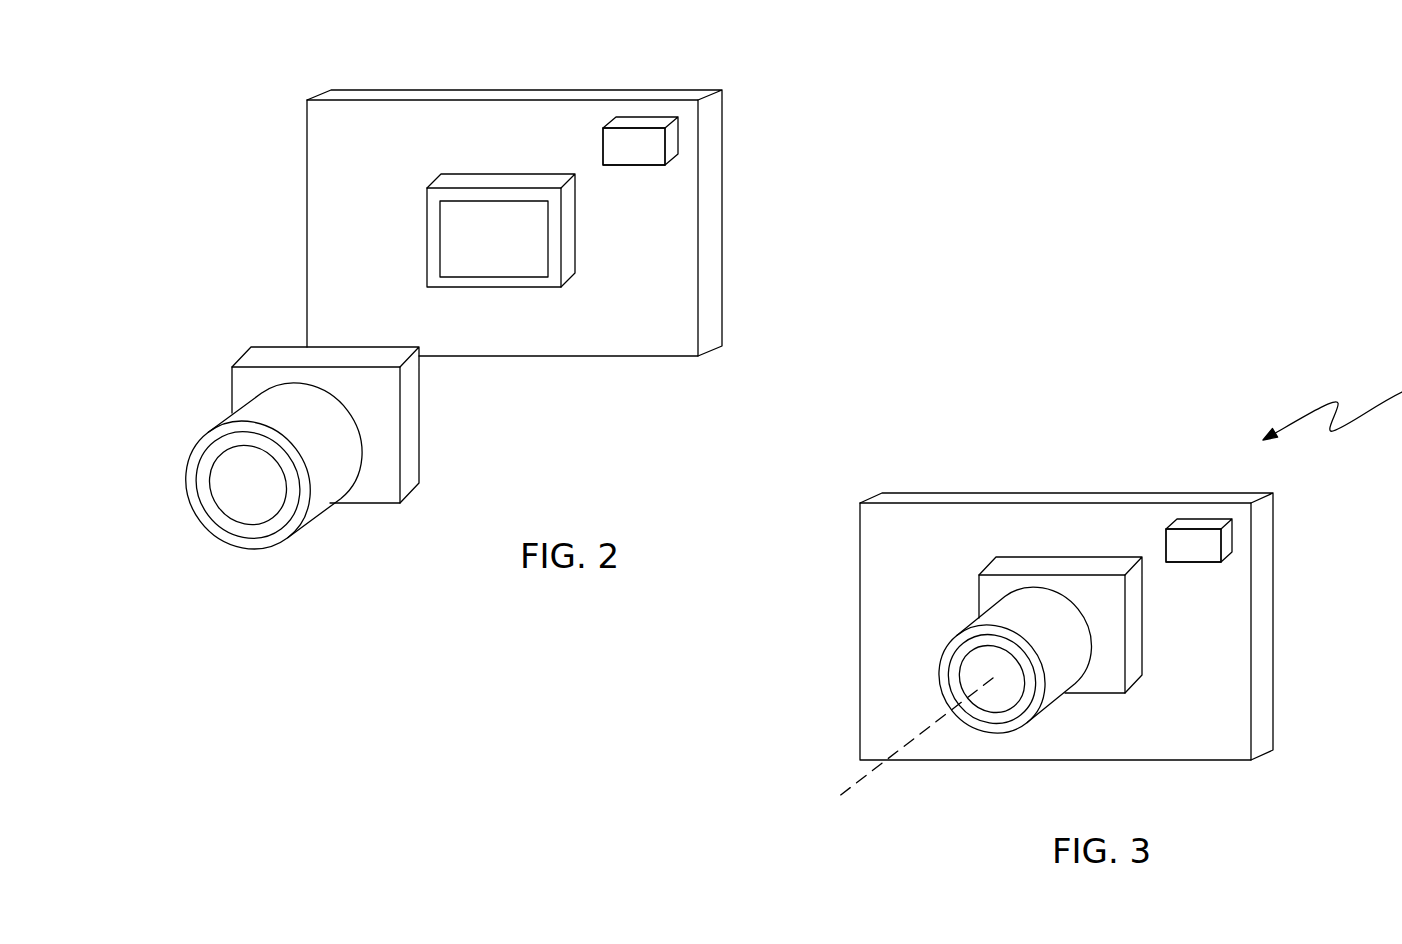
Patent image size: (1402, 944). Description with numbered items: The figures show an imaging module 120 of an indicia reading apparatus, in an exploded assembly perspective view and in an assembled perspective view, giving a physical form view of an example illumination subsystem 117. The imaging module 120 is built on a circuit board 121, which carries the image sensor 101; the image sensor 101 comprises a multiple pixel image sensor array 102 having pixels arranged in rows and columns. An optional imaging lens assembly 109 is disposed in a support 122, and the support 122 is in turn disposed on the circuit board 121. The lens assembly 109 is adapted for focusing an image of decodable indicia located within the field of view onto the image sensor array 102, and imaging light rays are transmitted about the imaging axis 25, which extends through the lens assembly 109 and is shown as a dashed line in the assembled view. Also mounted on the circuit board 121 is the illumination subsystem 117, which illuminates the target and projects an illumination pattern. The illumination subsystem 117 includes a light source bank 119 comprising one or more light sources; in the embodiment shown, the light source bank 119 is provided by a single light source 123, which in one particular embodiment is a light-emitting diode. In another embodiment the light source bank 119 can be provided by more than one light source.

In FIG. 2, the imaging module 120 is at (245, 126).
In FIG. 2, the circuit board 121 is at (673, 320).
In FIG. 3, the circuit board 121 is at (1066, 626).
In FIG. 2, the single light source 123 is at (657, 142).
In FIG. 3, the single light source 123 is at (1212, 545).
In FIG. 2, the illumination subsystem 117 is at (726, 181).
In FIG. 3, the illumination subsystem 117 is at (1284, 584).
In FIG. 2, the light source bank 119 is at (660, 179).
In FIG. 3, the light source bank 119 is at (1213, 580).
In FIG. 2, the image sensor 101 is at (512, 287).
In FIG. 2, the image sensor array 102 is at (512, 250).
In FIG. 2, the support 122 is at (330, 473).
In FIG. 3, the support 122 is at (1113, 667).
In FIG. 2, the imaging lens assembly 109 is at (228, 500).
In FIG. 3, the imaging lens assembly 109 is at (1006, 705).
In FIG. 3, the imaging axis 25 is at (857, 780).